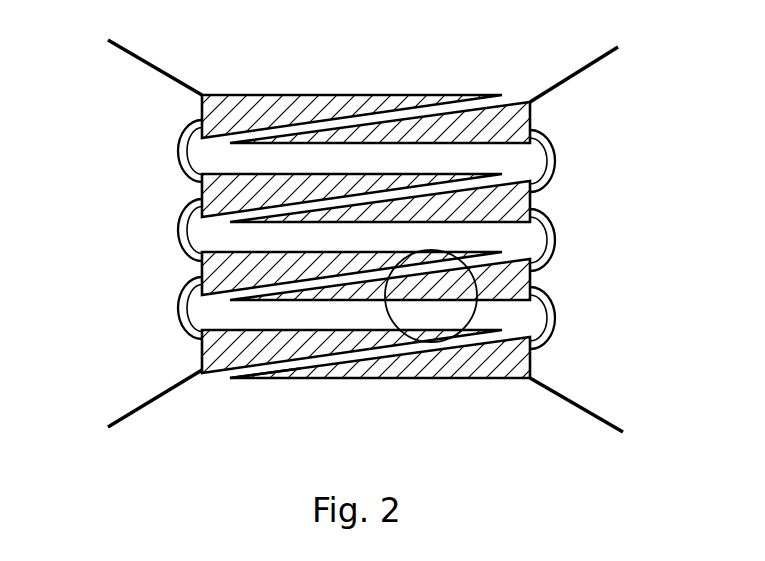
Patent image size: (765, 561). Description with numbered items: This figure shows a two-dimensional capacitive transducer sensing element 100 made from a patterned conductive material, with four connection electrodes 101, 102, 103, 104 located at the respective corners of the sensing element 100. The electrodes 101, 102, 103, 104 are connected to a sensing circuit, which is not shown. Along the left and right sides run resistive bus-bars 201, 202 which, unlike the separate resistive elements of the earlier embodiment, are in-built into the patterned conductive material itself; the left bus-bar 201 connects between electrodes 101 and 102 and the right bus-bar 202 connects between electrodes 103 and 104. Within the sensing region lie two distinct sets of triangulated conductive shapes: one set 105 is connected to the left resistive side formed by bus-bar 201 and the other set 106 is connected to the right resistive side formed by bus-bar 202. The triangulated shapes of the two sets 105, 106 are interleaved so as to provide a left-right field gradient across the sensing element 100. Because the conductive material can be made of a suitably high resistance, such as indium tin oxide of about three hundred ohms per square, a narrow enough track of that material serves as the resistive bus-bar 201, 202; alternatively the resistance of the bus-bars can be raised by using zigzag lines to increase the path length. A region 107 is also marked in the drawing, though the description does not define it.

The 2DCT sensing element 100 is at (372, 60).
The connection electrode 101 is at (148, 62).
The connection electrode 102 is at (146, 404).
The connection electrode 103 is at (585, 68).
The connection electrode 104 is at (585, 406).
The set of triangulated conductive shapes 105 is at (230, 372).
The set of triangulated conductive shapes 106 is at (470, 365).
The detail region 107 is at (474, 314).
The in-built resistive bus-bar 201 is at (178, 152).
The in-built resistive bus-bar 202 is at (554, 160).